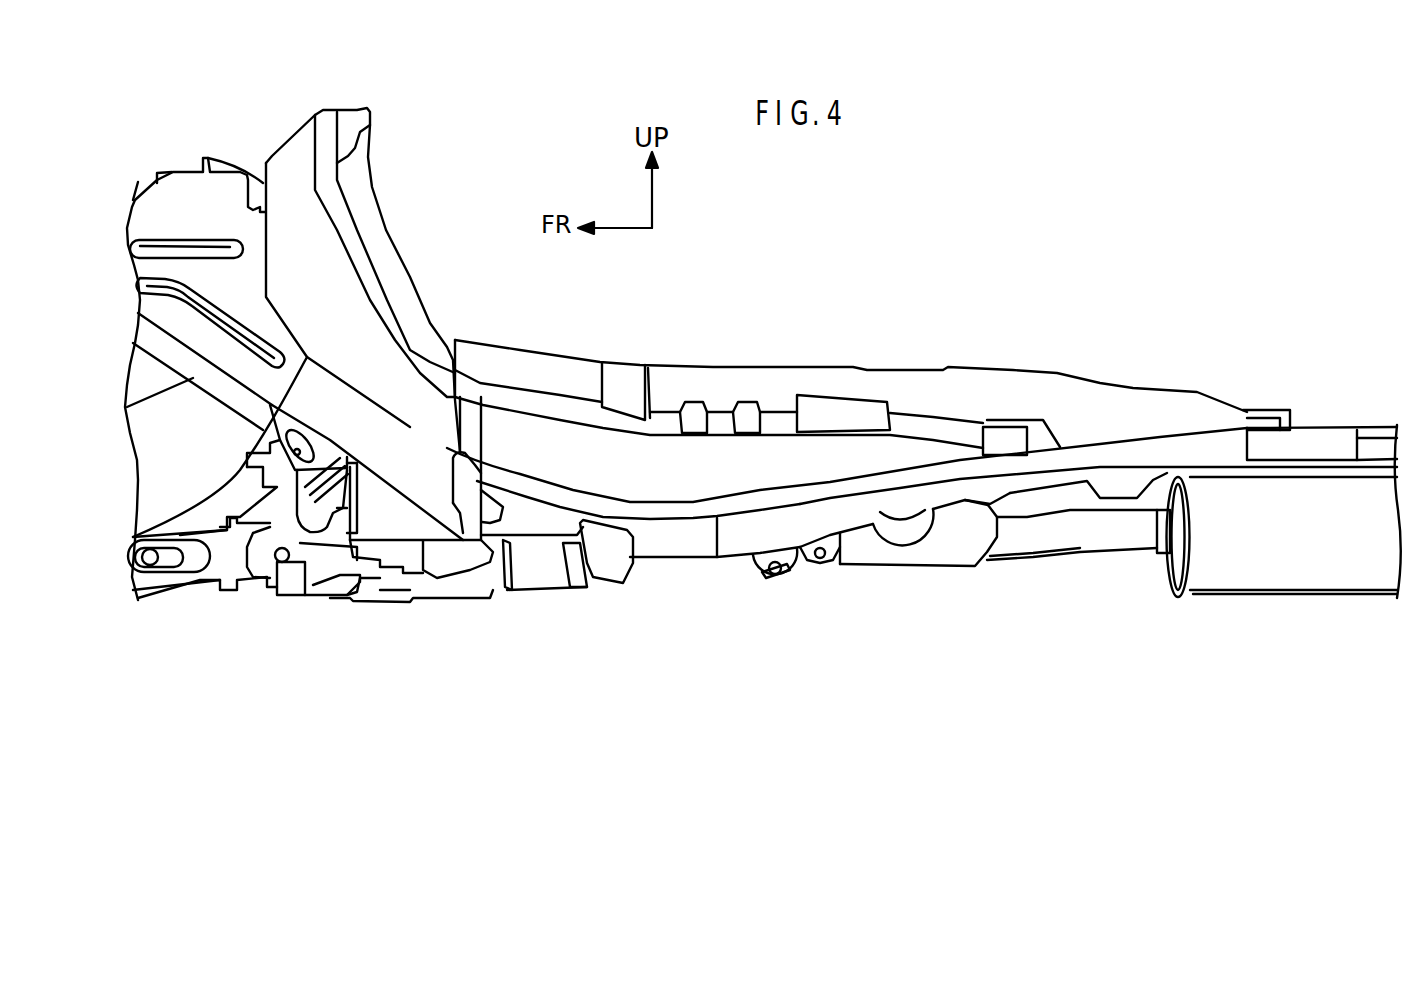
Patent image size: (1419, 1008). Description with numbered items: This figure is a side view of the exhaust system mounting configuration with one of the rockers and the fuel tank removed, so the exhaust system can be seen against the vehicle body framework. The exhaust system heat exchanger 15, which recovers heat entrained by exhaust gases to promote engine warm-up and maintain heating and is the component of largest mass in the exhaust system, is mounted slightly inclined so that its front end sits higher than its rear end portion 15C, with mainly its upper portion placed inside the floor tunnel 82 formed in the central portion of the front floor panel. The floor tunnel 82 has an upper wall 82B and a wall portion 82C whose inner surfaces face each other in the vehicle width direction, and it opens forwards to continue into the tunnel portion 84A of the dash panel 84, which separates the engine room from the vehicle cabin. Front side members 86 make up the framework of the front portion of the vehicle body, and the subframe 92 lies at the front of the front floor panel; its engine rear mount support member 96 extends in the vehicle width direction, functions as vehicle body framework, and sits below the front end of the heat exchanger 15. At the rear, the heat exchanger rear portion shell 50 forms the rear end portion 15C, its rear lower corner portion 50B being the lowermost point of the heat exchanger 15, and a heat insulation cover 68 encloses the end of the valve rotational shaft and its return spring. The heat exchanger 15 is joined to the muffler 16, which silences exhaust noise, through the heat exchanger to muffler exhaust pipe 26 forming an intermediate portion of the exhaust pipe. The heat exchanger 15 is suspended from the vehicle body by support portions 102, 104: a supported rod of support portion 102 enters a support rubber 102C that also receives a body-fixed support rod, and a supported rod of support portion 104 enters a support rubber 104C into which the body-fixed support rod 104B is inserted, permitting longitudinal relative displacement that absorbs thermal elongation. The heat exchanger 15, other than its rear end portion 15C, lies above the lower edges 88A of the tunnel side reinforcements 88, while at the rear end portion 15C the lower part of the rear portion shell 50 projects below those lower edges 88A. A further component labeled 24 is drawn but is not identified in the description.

The exhaust system heat exchanger 15 is at (884, 626).
The rear end portion 15C is at (893, 570).
The muffler 16 is at (1250, 577).
The bracket 24 is at (317, 513).
The heat exchanger to muffler exhaust pipe 26 is at (1087, 557).
The heat exchanger rear portion shell 50 is at (943, 560).
The rear lower corner portion 50B is at (970, 567).
The heat insulation cover 68 is at (920, 515).
The floor tunnel 82 is at (783, 455).
The upper wall 82B is at (933, 433).
The wall portion 82C is at (860, 447).
The dash panel 84 is at (375, 265).
The tunnel portion 84A is at (417, 393).
The front side members 86 is at (190, 197).
The tunnel side reinforcements 88 is at (690, 547).
The lower edges 88A is at (653, 563).
The subframe 92 is at (395, 607).
The engine rear mount support member 96 is at (453, 590).
The support portion 102 is at (818, 568).
The support rubber 102C is at (830, 573).
The support portion 104 is at (773, 578).
The support rod 104B is at (797, 573).
The support rubber 104C is at (753, 568).